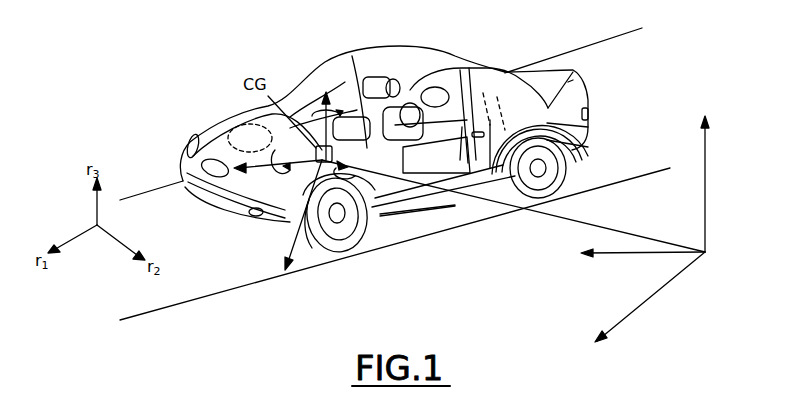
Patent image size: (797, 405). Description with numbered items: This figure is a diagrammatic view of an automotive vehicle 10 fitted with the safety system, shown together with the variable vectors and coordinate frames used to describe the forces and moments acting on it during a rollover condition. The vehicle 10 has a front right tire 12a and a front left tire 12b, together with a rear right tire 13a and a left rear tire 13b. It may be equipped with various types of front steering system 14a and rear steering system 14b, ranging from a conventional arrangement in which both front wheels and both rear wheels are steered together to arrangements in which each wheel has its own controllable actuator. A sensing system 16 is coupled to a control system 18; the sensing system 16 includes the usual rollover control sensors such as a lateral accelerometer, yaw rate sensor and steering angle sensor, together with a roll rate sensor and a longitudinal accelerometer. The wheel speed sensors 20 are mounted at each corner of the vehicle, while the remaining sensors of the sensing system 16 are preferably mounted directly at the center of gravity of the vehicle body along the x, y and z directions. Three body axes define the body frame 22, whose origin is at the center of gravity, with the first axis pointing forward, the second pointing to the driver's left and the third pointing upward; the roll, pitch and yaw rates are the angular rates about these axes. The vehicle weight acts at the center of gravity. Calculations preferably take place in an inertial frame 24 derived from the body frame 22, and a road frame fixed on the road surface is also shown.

The automotive vehicle 10 is at (430, 53).
The front right tire 12a is at (213, 143).
The front left tire 12b is at (338, 247).
The rear right tire 13a is at (568, 82).
The left rear tire 13b is at (575, 178).
The front steering system 14a is at (280, 220).
The rear steering system 14b is at (589, 100).
The sensing system 16 is at (323, 150).
The control system 18 is at (460, 127).
The wheel speed sensors 20 is at (388, 215).
The body frame 22 is at (267, 118).
The inertial frame 24 is at (707, 254).